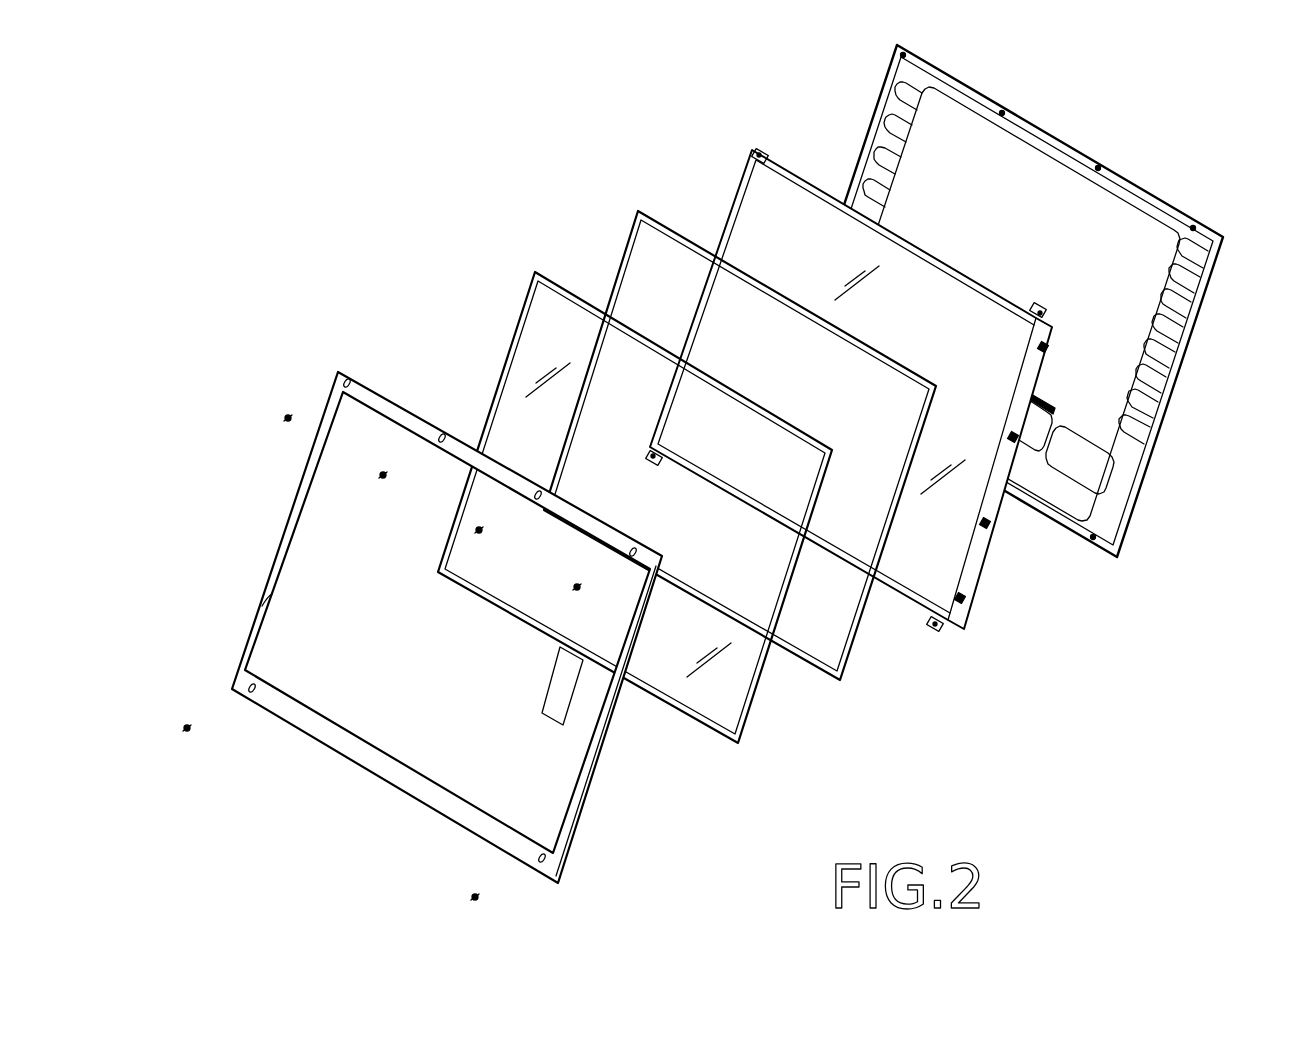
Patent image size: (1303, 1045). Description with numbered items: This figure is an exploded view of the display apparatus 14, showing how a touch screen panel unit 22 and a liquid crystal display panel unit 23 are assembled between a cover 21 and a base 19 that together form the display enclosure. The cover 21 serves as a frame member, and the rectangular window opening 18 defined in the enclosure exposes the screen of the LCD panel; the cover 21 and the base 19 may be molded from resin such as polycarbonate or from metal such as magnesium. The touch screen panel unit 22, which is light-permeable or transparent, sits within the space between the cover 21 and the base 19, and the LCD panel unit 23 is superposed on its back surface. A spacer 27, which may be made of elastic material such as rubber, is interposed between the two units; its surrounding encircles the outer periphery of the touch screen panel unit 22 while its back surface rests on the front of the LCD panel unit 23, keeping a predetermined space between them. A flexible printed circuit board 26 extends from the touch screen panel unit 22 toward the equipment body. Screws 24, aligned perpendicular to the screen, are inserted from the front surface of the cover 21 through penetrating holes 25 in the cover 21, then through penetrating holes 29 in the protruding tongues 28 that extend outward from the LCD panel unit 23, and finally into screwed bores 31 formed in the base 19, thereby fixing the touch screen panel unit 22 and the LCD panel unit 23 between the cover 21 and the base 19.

The display apparatus 14 is at (527, 210).
The window opening 18 is at (268, 600).
The base 19 is at (1143, 508).
The cover 21 is at (585, 816).
The touch screen panel unit 22 is at (760, 686).
The LCD panel unit 23 is at (975, 578).
The screws 24 is at (285, 418).
The penetrating holes 25 is at (345, 380).
The flexible printed circuit board 26 is at (548, 698).
The spacer 27 is at (641, 213).
The protruding tongues 28 is at (768, 154).
The penetrating holes 29 is at (758, 151).
The screwed bores 31 is at (902, 55).